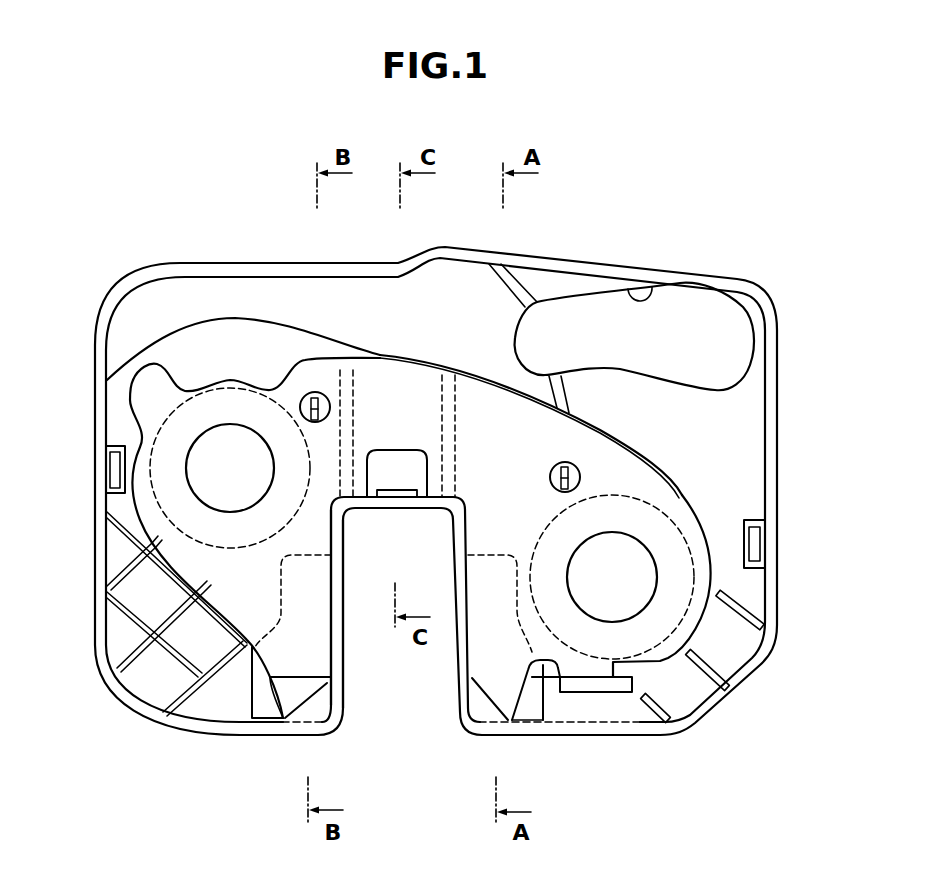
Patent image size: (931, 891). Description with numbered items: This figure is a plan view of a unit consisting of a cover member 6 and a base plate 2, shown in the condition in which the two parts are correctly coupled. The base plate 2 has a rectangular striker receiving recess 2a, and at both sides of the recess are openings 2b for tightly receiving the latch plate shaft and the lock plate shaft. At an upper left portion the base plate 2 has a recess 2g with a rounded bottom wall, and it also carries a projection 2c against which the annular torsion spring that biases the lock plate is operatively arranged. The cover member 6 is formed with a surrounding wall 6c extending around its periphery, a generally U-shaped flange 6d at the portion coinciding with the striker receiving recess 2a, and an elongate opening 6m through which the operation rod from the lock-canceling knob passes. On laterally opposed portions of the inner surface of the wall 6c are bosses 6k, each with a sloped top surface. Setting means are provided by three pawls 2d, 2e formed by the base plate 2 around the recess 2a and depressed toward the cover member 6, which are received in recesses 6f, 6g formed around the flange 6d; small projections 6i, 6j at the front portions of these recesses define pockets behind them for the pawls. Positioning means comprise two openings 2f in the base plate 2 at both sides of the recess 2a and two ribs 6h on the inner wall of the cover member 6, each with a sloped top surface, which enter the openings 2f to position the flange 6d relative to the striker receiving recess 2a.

The base plate 2 is at (487, 459).
The striker receiving recess 2a is at (381, 549).
The opening 2b is at (200, 432).
The projection of the base plate 2c is at (620, 690).
The pawl 2d is at (285, 718).
The pawl 2e is at (400, 430).
The opening 2f is at (300, 393).
The recess 2g is at (194, 376).
The cover member 6 is at (474, 333).
The surrounding wall 6c is at (572, 262).
The U-shaped flange 6d is at (340, 647).
The recess 6f is at (260, 703).
The recess 6g is at (420, 430).
The rib 6h is at (312, 392).
The small projection 6i is at (318, 710).
The small projection 6j is at (395, 462).
The boss 6k is at (113, 470).
The elongate opening 6m is at (650, 300).